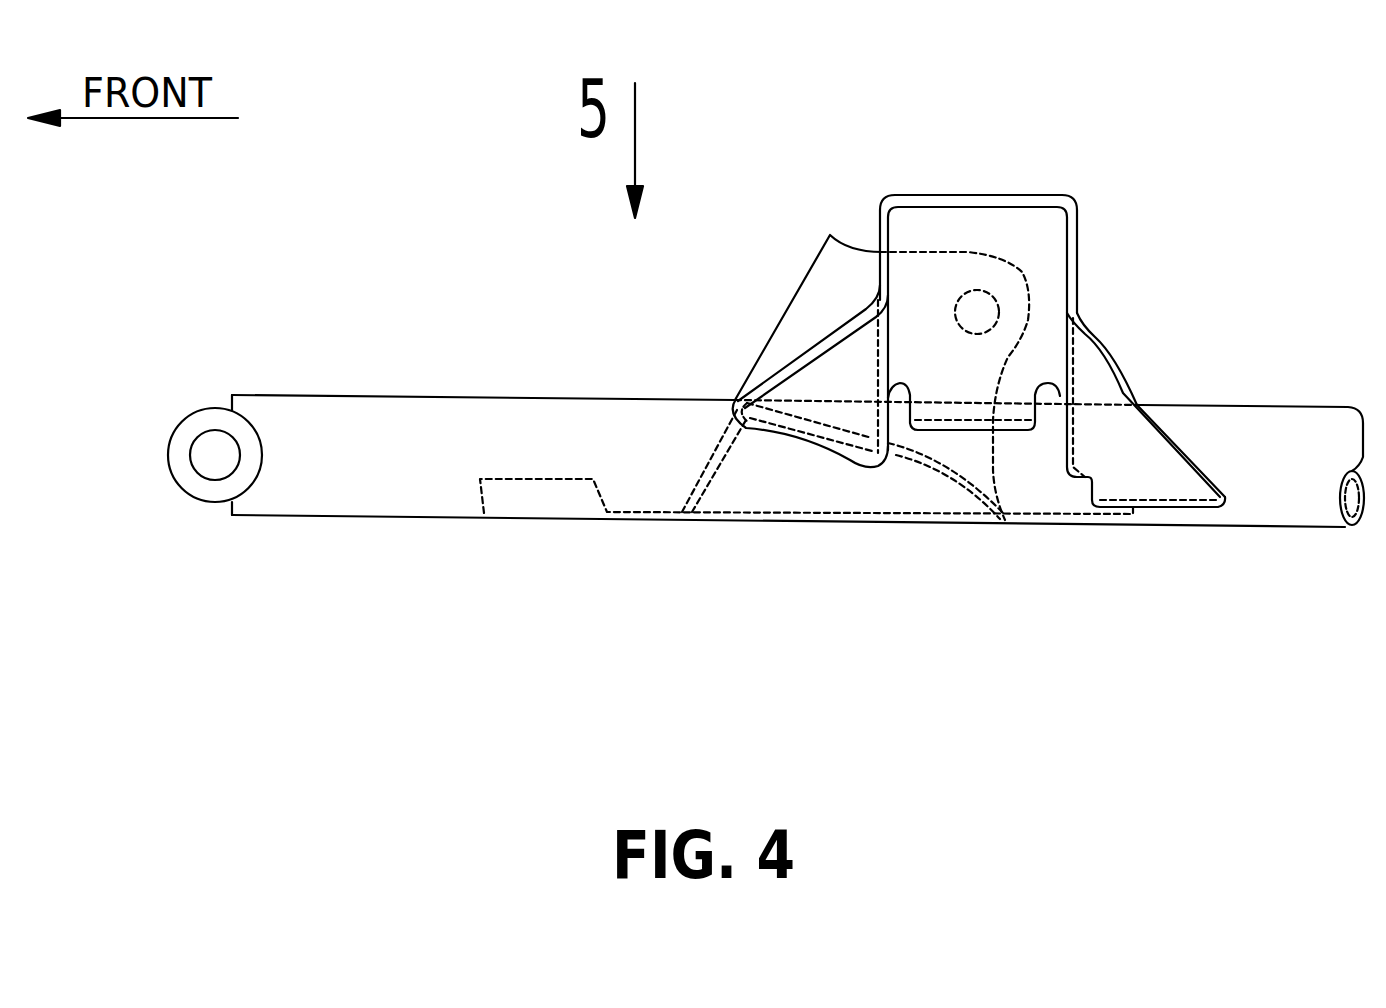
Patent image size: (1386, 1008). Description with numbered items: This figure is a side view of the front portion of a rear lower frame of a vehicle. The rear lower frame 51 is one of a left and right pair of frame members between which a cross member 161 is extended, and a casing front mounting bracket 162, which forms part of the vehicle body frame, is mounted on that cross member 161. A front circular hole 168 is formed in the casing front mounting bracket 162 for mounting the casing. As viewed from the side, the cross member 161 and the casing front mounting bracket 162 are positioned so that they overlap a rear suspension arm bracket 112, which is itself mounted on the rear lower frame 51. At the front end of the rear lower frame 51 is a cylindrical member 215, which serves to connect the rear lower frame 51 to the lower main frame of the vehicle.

The rear lower frame 51 is at (415, 417).
The cylindrical member 215 is at (183, 413).
The rear suspension arm bracket 112 is at (1077, 237).
The cross member 161 is at (712, 448).
The casing front mounting bracket 162 is at (818, 288).
The front circular hole 168 is at (967, 315).